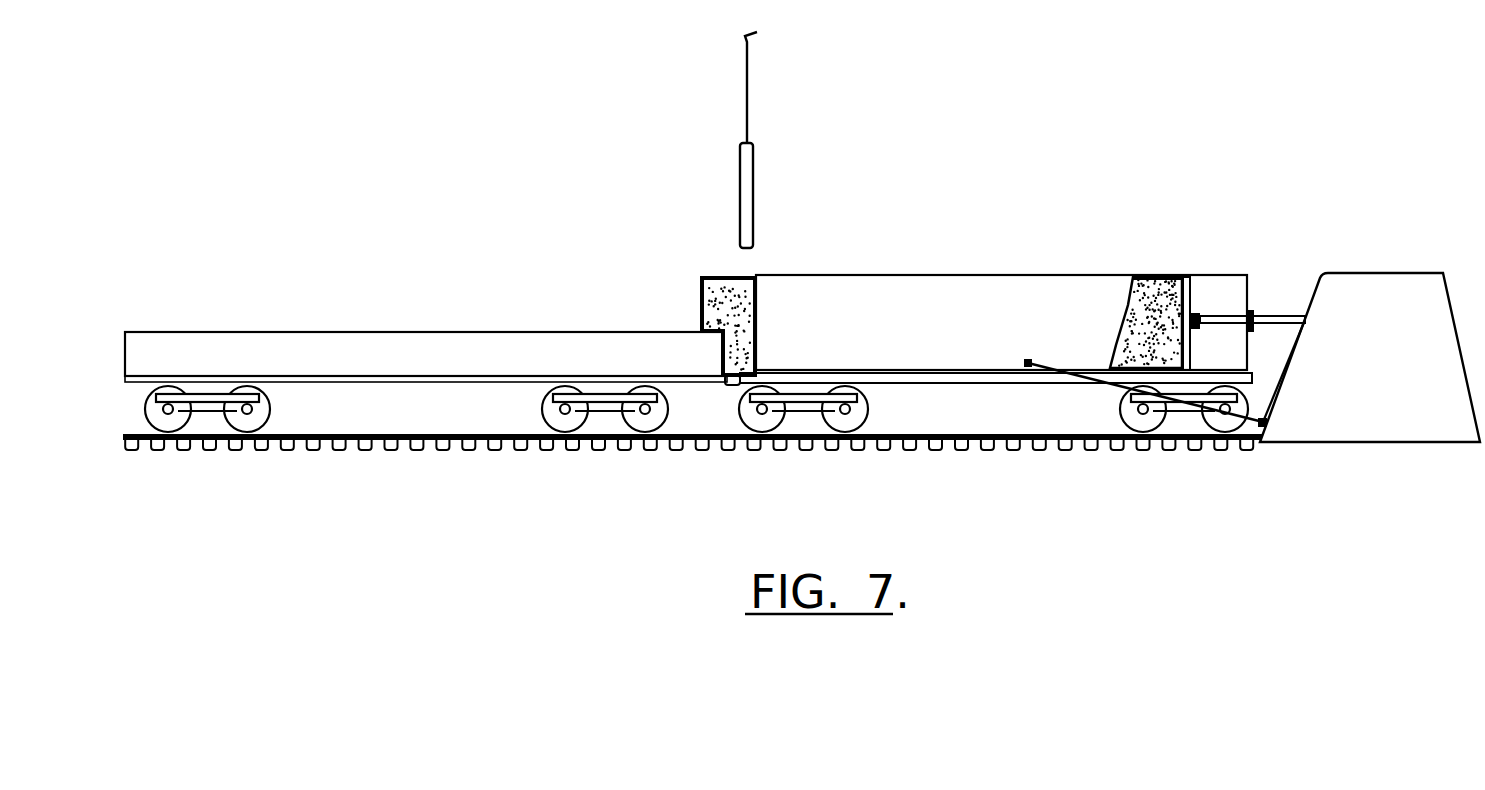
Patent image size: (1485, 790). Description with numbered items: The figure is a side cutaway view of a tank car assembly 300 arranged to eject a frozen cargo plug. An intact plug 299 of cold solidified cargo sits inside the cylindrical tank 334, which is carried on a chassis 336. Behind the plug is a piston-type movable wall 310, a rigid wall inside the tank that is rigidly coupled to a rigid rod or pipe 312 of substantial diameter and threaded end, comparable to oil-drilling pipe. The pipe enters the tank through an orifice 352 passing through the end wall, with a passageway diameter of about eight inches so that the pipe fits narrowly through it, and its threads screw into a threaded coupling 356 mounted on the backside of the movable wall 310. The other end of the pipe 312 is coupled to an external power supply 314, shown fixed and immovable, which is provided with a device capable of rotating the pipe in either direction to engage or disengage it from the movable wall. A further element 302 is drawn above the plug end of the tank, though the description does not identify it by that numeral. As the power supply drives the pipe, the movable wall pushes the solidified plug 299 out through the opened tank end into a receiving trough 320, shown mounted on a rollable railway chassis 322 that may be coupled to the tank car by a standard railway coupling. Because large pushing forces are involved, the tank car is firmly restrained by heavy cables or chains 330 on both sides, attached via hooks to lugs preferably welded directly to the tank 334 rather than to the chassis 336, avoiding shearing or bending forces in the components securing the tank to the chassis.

The solidified plug 299 is at (718, 278).
The tank car assembly 300 is at (1079, 230).
The sensor shaft 302 is at (754, 184).
The piston-type movable wall 310 is at (1192, 284).
The rigid rod or pipe 312 is at (1266, 315).
The external power supply 314 is at (1400, 372).
The receiving trough 320 is at (438, 332).
The rollable railway chassis 322 is at (1027, 360).
The heavy cables or chains 330 is at (1180, 397).
The cylindrical tank 334 is at (918, 283).
The chassis 336 is at (988, 383).
The orifice 352 is at (1252, 330).
The threaded coupling 356 is at (1196, 314).